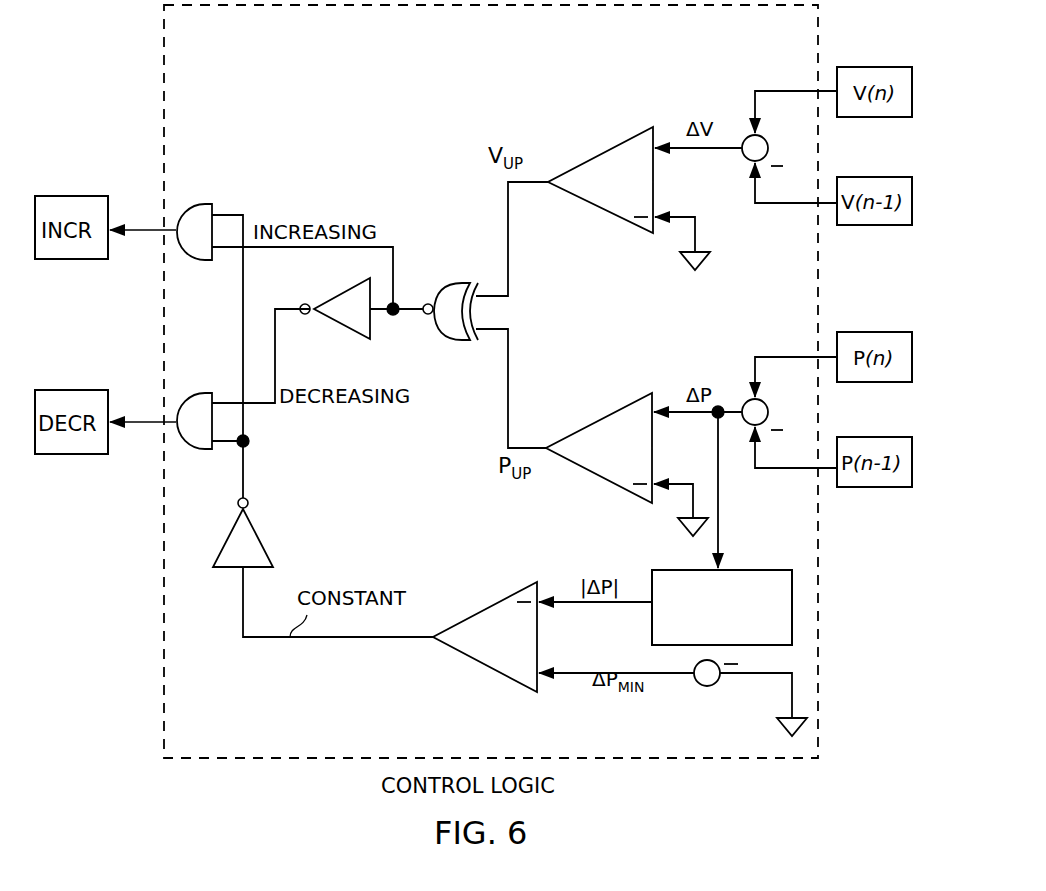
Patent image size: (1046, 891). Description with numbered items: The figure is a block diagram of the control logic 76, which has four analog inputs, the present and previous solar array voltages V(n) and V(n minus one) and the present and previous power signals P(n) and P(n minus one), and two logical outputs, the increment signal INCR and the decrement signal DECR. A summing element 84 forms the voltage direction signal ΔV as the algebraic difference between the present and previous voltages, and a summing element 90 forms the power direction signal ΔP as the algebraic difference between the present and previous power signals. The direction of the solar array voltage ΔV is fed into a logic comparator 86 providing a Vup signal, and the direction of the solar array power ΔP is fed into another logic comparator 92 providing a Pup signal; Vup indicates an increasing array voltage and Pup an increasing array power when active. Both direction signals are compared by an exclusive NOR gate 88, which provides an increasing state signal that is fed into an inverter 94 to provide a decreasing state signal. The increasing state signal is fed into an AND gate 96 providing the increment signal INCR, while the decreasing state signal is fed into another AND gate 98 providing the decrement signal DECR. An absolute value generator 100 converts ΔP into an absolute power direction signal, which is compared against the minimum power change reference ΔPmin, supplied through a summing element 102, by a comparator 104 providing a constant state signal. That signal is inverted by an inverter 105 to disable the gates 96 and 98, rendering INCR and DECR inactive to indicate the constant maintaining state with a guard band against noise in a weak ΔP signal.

The control logic 76 is at (350, 6).
The voltage difference summer 84 is at (746, 138).
The logic comparator 86 is at (617, 147).
The exclusive NOR gate 88 is at (462, 283).
The power difference summer 90 is at (746, 402).
The logic comparator 92 is at (617, 411).
The inverter 94 is at (371, 333).
The AND gate 96 is at (200, 261).
The AND gate 98 is at (200, 450).
The absolute value generator 100 is at (660, 570).
The minimum power difference summer 102 is at (703, 687).
The comparator 104 is at (492, 672).
The inverter 105 is at (284, 525).